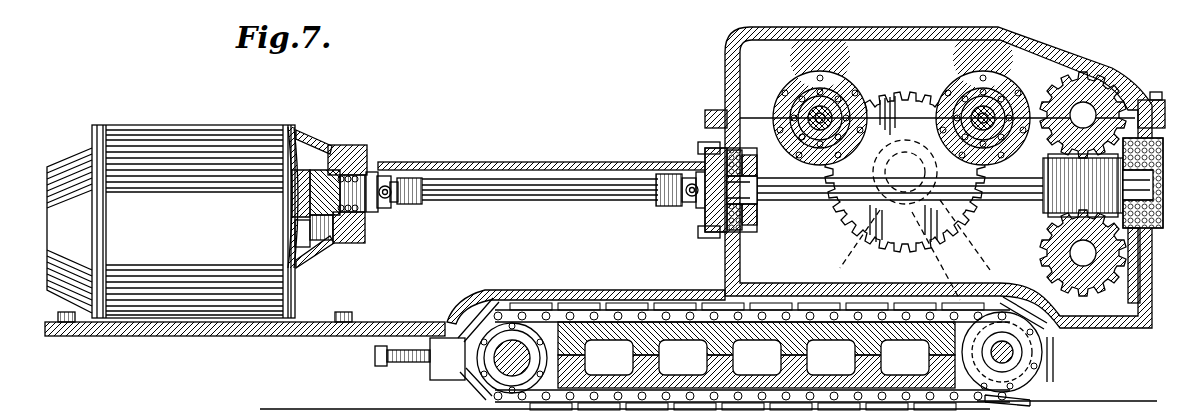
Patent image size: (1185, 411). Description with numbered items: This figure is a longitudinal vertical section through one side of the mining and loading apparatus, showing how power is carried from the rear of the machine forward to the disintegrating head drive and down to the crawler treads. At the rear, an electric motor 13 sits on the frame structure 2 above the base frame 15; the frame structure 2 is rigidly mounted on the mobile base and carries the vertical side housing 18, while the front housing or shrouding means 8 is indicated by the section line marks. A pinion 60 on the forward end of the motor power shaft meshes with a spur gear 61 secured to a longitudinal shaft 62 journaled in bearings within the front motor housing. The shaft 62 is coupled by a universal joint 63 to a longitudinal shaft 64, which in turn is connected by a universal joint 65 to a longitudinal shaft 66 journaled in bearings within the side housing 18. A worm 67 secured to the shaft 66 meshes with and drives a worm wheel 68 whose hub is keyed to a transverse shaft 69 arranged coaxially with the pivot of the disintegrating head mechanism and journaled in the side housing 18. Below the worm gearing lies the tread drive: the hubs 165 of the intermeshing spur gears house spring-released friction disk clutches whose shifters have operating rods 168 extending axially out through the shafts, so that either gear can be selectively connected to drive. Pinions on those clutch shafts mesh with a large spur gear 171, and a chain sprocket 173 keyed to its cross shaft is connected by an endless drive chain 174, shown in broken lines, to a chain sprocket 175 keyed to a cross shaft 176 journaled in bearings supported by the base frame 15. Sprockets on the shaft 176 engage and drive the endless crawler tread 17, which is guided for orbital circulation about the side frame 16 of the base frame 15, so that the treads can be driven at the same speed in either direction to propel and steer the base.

The frame structure 2 is at (1148, 322).
The front housing or shrouding means 8 is at (700, 120).
The motor 13 is at (205, 138).
The base frame 15 is at (405, 320).
The side frame 16 is at (575, 325).
The endless crawler tread 17 is at (625, 300).
The side housing or gear casing 18 is at (1030, 40).
The pinion 60 is at (325, 228).
The spur gear 61 is at (318, 175).
The longitudinal shaft 62 is at (378, 170).
The universal joint 63 is at (406, 176).
The longitudinal shaft 64 is at (555, 190).
The universal joint 65 is at (690, 208).
The longitudinal shaft 66 is at (822, 198).
The worm 67 is at (1080, 182).
The worm wheel 68 is at (1095, 90).
The transverse shaft 69 is at (1142, 100).
The hub 165 is at (803, 80).
The operating rod 168 is at (826, 108).
The large spur gear 171 is at (882, 228).
The chain sprocket 173 is at (908, 100).
The endless drive chain 174 is at (926, 262).
The chain sprocket 175 is at (1056, 379).
The cross shaft 176 is at (1030, 350).